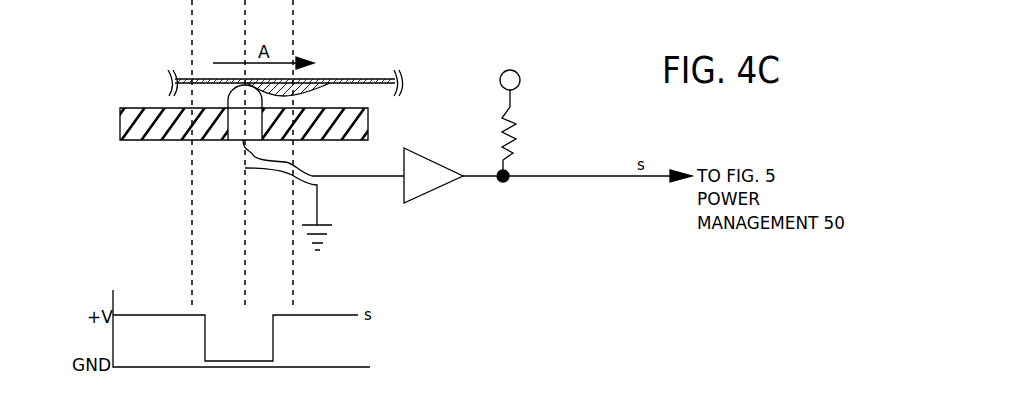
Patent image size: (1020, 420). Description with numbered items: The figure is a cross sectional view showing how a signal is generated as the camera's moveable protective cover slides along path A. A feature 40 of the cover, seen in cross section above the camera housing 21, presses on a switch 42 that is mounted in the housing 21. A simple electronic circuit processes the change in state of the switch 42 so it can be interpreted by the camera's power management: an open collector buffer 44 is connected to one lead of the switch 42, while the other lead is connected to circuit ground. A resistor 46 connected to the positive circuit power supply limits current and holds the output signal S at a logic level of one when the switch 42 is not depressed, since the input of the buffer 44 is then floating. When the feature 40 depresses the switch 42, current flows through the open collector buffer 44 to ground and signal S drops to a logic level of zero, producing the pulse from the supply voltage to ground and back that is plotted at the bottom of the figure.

The camera housing 21 is at (120, 123).
The feature 40 is at (327, 82).
The switch 42 is at (222, 140).
The open collector buffer 44 is at (411, 193).
The resistor 46 is at (514, 128).